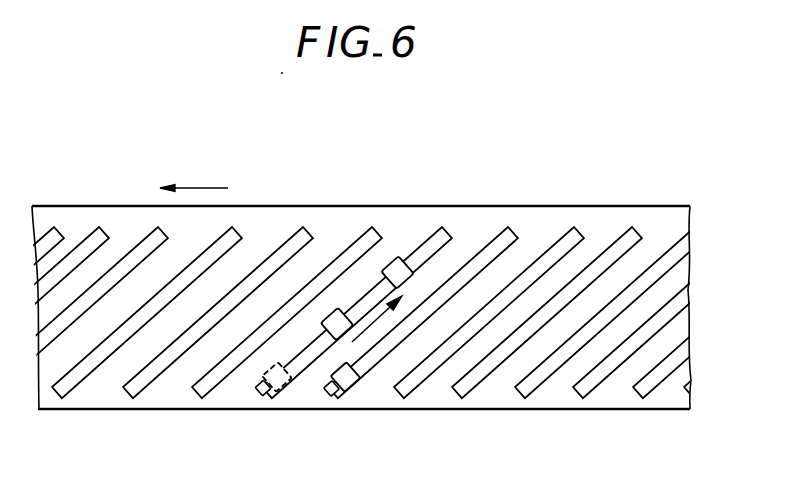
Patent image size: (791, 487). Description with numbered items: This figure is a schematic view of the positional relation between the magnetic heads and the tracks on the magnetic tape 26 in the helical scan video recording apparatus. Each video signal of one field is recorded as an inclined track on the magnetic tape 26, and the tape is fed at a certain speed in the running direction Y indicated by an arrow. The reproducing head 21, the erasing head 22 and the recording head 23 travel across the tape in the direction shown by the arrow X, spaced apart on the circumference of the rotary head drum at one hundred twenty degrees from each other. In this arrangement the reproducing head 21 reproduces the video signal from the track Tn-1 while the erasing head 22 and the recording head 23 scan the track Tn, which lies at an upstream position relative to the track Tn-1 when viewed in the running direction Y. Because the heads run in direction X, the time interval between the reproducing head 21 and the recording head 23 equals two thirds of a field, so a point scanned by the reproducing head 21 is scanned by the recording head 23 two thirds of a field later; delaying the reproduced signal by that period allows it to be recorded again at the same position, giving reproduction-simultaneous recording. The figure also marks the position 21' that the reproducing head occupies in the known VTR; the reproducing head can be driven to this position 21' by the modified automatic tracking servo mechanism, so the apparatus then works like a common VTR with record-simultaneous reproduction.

The reproducing head 21 is at (345, 415).
The position of the reproducing head in the known VTR 21' is at (266, 415).
The erasing head 22 is at (397, 257).
The recording head 23 is at (333, 311).
The magnetic tape 26 is at (644, 206).
The rotational direction X is at (370, 332).
The running direction of the magnetic tape Y is at (199, 187).
The track Tn is at (300, 366).
The track Tn-1 is at (395, 347).